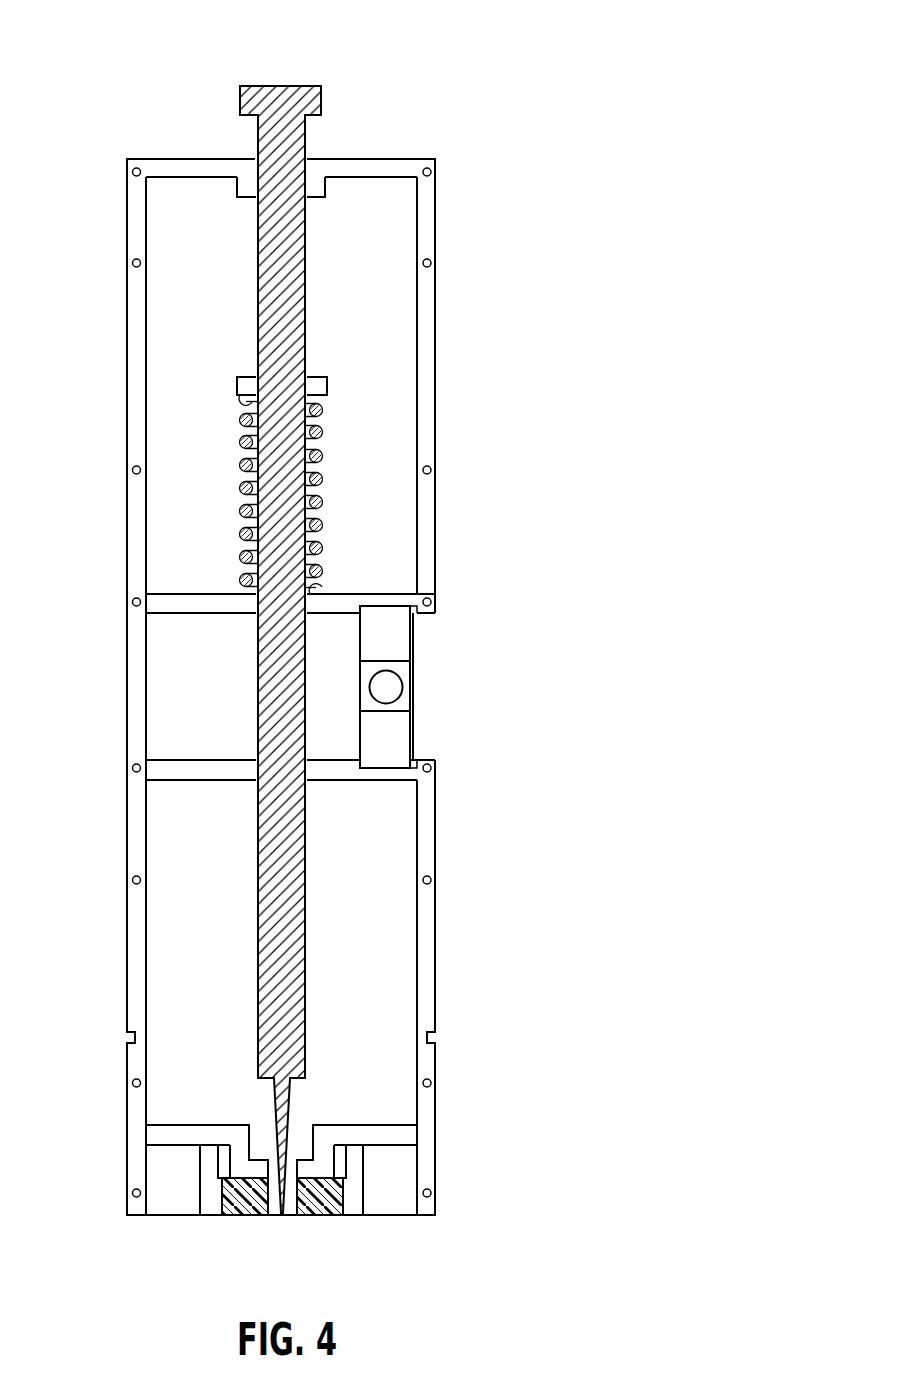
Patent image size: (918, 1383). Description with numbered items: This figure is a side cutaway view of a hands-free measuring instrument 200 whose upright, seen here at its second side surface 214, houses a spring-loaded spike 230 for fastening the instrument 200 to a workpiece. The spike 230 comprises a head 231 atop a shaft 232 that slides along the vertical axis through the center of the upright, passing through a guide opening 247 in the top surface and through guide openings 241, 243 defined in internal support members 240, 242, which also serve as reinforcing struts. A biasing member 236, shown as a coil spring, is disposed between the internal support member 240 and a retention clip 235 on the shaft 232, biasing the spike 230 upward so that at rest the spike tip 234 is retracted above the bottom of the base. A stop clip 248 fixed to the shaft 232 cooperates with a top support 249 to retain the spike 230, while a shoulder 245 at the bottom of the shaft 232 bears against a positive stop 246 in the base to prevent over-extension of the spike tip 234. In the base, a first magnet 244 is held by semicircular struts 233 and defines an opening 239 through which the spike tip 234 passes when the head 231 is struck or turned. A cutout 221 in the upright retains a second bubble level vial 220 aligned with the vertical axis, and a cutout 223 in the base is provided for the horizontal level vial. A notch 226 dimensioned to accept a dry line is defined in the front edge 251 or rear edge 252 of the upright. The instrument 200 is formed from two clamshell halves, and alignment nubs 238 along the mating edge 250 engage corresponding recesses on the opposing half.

The measuring instrument 200 is at (520, 40).
The second side surface 214 is at (444, 303).
The second bubble level vial 220 is at (411, 678).
The cutout 221 is at (418, 765).
The cutout 223 is at (412, 610).
The notch 226 is at (129, 1037).
The spike 230 is at (230, 67).
The head 231 is at (322, 97).
The shaft 232 is at (288, 258).
The semicircular strut 233 is at (210, 1195).
The spike tip 234 is at (283, 1215).
The retention clip 235 is at (328, 387).
The biasing member 236 is at (323, 458).
The alignment nubs 238 is at (132, 172).
The opening 239 is at (275, 1213).
The internal support member 240 is at (172, 593).
The guide opening 241 is at (255, 616).
The internal support member 242 is at (172, 760).
The guide opening 243 is at (307, 785).
The first magnet 244 is at (248, 1200).
The shoulder 245 is at (300, 1082).
The positive stop 246 is at (264, 1160).
The guide opening 247 is at (307, 162).
The stop clip 248 is at (252, 191).
The top support 249 is at (400, 167).
The mating edge 250 is at (131, 357).
The front edge 251 is at (436, 962).
The rear edge 252 is at (128, 402).